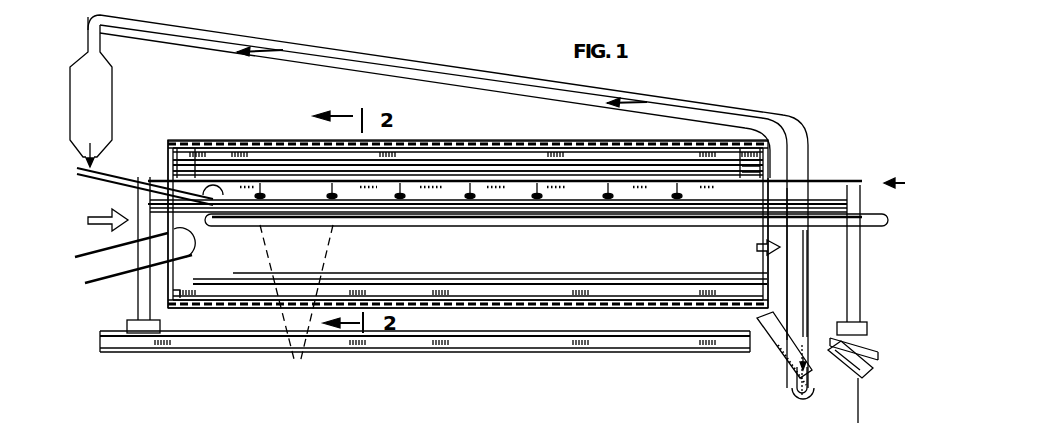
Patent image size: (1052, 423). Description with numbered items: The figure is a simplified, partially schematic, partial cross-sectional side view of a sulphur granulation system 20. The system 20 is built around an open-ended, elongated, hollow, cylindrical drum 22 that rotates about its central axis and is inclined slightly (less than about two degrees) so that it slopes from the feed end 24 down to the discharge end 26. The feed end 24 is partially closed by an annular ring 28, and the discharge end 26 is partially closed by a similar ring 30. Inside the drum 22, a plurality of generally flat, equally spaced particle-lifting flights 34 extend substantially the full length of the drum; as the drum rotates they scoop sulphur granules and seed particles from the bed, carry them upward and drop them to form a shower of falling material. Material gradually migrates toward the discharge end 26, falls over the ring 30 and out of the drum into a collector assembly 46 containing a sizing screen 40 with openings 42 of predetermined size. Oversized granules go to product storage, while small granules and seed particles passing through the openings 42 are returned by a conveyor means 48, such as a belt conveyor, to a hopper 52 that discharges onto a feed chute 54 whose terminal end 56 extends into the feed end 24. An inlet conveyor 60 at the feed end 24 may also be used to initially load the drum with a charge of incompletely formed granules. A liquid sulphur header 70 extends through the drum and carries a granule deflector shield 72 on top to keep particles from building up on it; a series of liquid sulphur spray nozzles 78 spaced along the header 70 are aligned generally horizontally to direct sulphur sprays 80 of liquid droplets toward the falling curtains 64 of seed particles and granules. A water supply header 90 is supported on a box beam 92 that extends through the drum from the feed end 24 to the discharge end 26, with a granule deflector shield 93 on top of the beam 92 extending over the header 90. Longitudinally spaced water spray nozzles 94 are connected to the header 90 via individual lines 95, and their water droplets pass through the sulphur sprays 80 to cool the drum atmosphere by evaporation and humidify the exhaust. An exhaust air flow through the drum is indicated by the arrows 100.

The sulphur granulation system 20 is at (800, 99).
The drum 22 is at (470, 142).
The feed end 24 is at (184, 278).
The discharge end 26 is at (773, 173).
The annular ring 28 is at (168, 152).
The ring 30 is at (777, 137).
The particle-lifting flights 34 is at (583, 150).
The sizing screen 40 is at (800, 328).
The openings 42 is at (814, 343).
The collector assembly 46 is at (777, 350).
The conveyor means 48 is at (746, 108).
The hopper 52 is at (113, 93).
The feed chute 54 is at (78, 172).
The terminal end 56 is at (218, 207).
The inlet conveyor 60 is at (98, 247).
The falling curtains 64 is at (532, 413).
The liquid sulphur header 70 is at (345, 230).
The granule deflector shield 72 is at (427, 202).
The liquid sulphur spray nozzles 78 is at (296, 306).
The sulphur sprays 80 is at (502, 412).
The water supply header 90 is at (285, 185).
The box beam 92 is at (225, 160).
The granule deflector shield 93 is at (230, 175).
The water spray nozzles 94 is at (498, 203).
The individual lines 95 is at (520, 203).
The arrows 100 is at (95, 215).